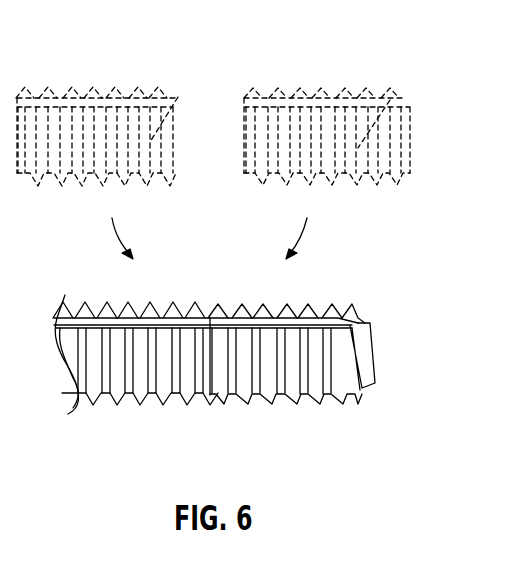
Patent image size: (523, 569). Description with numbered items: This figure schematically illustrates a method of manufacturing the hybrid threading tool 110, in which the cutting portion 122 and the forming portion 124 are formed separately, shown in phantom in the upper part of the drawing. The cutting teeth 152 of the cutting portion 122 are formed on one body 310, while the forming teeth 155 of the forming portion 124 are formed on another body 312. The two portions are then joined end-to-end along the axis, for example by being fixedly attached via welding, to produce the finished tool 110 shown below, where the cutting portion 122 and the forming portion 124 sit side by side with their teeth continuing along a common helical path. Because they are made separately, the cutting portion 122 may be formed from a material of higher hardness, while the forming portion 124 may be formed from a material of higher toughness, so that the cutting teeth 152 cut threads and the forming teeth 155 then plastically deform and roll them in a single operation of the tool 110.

The tool 110 is at (355, 305).
The cutting portion 122 is at (358, 173).
The forming portion 124 is at (52, 180).
The cutting teeth 152 is at (298, 84).
The forming teeth 155 is at (68, 86).
The body 310 is at (390, 100).
The body 312 is at (178, 97).